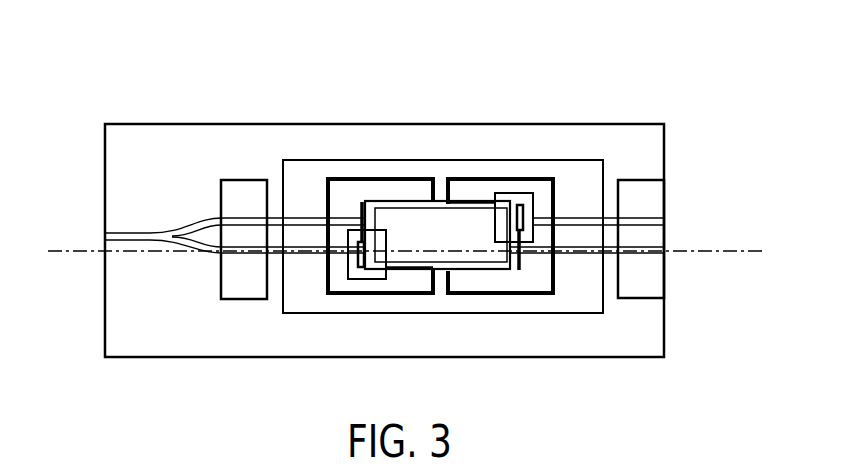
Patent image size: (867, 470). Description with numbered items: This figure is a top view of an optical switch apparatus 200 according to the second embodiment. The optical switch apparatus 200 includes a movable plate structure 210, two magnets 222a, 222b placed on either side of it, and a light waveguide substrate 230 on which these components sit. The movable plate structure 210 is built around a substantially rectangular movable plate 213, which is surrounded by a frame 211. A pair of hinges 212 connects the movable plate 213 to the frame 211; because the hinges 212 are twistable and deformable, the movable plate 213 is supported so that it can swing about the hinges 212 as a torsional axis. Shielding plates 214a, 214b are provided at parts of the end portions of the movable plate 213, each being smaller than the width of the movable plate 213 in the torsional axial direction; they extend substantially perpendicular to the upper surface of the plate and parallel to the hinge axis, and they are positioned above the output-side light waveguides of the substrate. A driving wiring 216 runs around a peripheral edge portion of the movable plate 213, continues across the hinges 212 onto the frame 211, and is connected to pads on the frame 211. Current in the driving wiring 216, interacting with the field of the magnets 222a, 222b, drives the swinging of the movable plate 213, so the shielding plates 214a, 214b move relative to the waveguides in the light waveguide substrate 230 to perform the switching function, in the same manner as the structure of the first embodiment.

The optical switch apparatus 200 is at (133, 79).
The movable plate structure 210 is at (469, 156).
The frame 211 is at (479, 300).
The hinges 212 is at (442, 188).
The movable plate 213 is at (387, 223).
The shielding plate 214a is at (363, 268).
The shielding plate 214b is at (520, 210).
The driving wiring 216 is at (410, 266).
The magnet 222a is at (236, 188).
The magnet 222b is at (640, 188).
The light waveguide substrate 230 is at (171, 337).